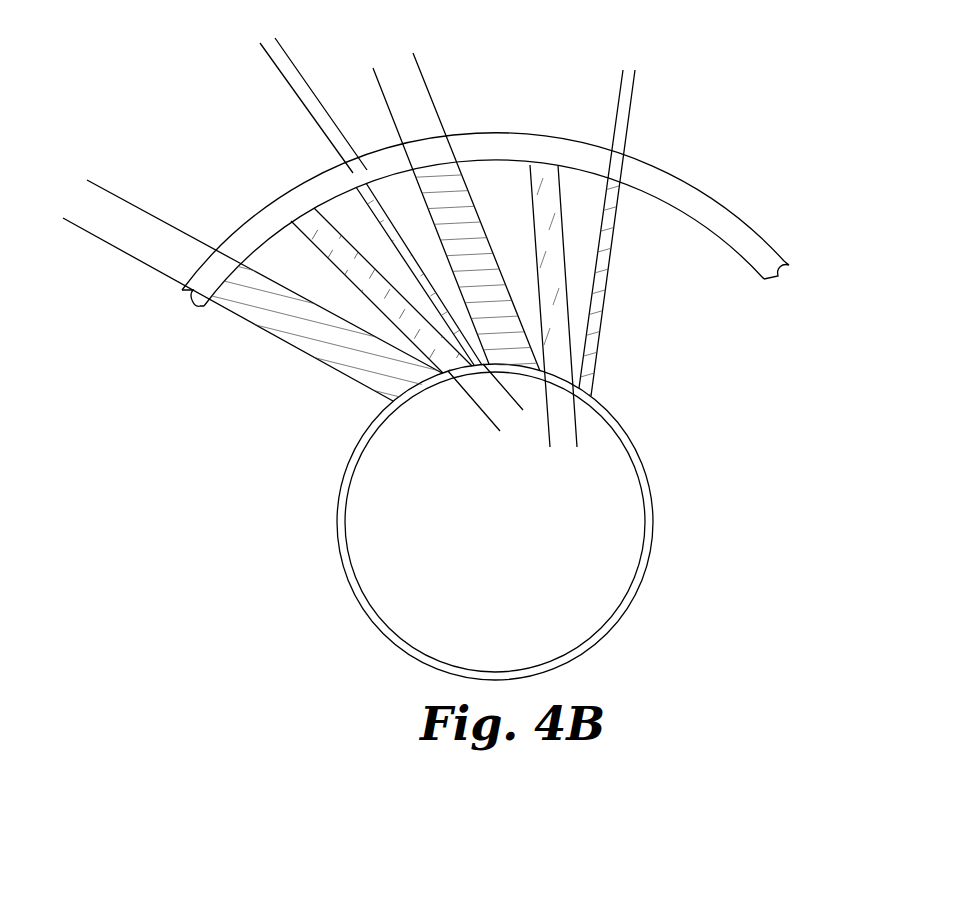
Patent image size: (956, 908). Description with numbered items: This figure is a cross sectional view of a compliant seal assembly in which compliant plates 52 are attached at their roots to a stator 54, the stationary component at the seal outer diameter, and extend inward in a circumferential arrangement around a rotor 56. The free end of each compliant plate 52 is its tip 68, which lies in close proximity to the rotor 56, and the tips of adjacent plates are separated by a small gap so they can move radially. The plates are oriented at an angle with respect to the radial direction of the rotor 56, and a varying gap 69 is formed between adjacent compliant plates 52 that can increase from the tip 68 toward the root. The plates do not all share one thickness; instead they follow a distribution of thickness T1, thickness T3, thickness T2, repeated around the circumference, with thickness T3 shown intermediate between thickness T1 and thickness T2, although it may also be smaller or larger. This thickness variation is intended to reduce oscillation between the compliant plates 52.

The compliant plates 52 is at (363, 300).
The stator 54 is at (753, 247).
The rotor 56 is at (522, 539).
The tip 68 is at (607, 242).
The gap 69 is at (345, 215).
The thickness T1 is at (238, 92).
The thickness T2 is at (463, 62).
The thickness T3 is at (489, 421).